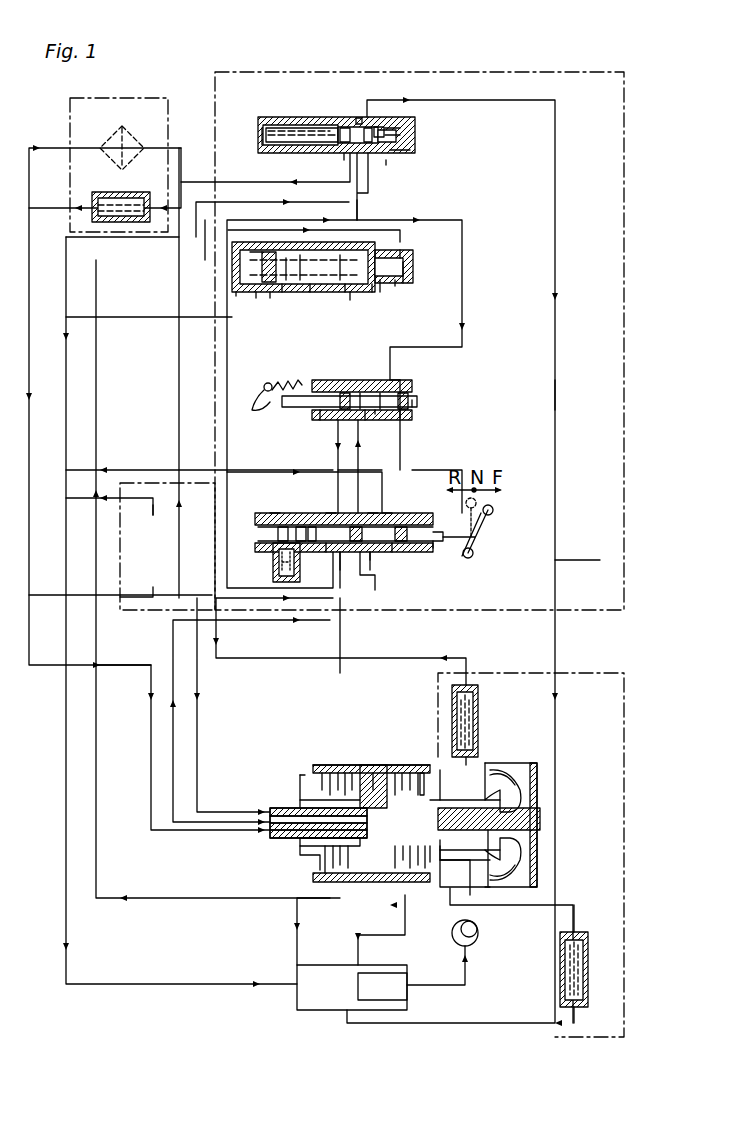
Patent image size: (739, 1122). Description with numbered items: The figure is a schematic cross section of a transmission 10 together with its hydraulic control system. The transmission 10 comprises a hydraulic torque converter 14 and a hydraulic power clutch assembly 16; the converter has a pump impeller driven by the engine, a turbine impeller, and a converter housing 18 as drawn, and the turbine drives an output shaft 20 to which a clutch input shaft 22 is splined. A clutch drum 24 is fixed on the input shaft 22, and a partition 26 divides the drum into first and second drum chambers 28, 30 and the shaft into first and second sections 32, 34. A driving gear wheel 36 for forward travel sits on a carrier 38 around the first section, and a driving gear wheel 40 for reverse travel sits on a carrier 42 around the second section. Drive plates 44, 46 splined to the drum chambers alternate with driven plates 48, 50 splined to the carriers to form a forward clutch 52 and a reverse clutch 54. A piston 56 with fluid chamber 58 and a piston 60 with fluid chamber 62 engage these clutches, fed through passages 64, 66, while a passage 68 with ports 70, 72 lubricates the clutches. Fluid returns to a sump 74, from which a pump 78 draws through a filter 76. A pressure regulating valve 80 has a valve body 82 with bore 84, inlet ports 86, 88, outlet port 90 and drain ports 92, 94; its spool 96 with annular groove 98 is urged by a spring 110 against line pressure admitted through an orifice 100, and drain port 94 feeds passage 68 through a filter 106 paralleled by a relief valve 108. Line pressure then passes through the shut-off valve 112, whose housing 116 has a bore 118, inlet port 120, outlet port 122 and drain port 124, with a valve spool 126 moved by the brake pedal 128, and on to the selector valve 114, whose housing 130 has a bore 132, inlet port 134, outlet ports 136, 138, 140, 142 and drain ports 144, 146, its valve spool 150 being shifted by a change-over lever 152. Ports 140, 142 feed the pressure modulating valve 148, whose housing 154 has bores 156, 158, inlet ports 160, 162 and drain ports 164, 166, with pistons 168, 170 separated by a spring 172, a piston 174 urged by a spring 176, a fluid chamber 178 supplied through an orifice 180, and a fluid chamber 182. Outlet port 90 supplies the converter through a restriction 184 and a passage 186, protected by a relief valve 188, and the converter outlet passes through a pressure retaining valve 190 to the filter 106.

The transmission 10 is at (366, 690).
The hydraulic torque converter 14 is at (530, 752).
The hydraulic power clutch assembly 16 is at (375, 882).
The converter housing 18 is at (538, 780).
The output shaft 20 is at (478, 770).
The clutch input shaft 22 is at (274, 848).
The clutch drum 24 is at (372, 773).
The partition 26 is at (368, 773).
The first drum chamber 28 is at (345, 773).
The second drum chamber 30 is at (418, 773).
The first section 32 is at (295, 810).
The second section 34 is at (500, 765).
The driving gear wheel for forward travel 36 is at (300, 790).
The carrier 38 is at (308, 855).
The driving gear wheel for reverse travel 40 is at (450, 890).
The carrier 42 is at (455, 790).
The drive plates 44 is at (310, 775).
The drive plates 46 is at (450, 790).
The driven plates 48 is at (316, 760).
The driven plates 50 is at (428, 765).
The forward clutch 52 is at (295, 855).
The reverse clutch 54 is at (470, 900).
The piston 56 is at (335, 773).
The fluid chamber 58 is at (355, 880).
The piston 60 is at (402, 773).
The fluid chamber 62 is at (378, 880).
The passage 64 is at (272, 818).
The passage 66 is at (260, 826).
The passage 68 is at (262, 838).
The port 70 is at (340, 873).
The port 72 is at (410, 880).
The sump 74 is at (298, 994).
The filter 76 is at (400, 992).
The hydraulic fluid pump 78 is at (476, 940).
The pressure regulating valve 80 is at (250, 132).
The valve body 82 is at (262, 145).
The bore 84 is at (398, 118).
The inlet port 86 is at (400, 138).
The inlet port 88 is at (400, 153).
The outlet port 90 is at (366, 128).
The drain port 92 is at (346, 156).
The drain port 94 is at (378, 125).
The spool 96 is at (342, 124).
The annular groove 98 is at (358, 208).
The orifice 100 is at (390, 165).
The hydraulic fluid filter 106 is at (128, 140).
The relief valve 108 is at (130, 198).
The spring 110 is at (276, 124).
The shut-off valve 112 is at (485, 400).
The selector valve 114 is at (250, 532).
The housing 116 is at (380, 412).
The bore 118 is at (405, 418).
The inlet port 120 is at (402, 380).
The outlet port 122 is at (368, 420).
The drain port 124 is at (326, 420).
The valve spool 126 is at (420, 406).
The brake pedal 128 is at (265, 391).
The housing 130 is at (275, 513).
The bore 132 is at (270, 550).
The inlet port 134 is at (372, 513).
The outlet port 136 is at (330, 552).
The outlet port 138 is at (395, 556).
The outlet port 140 is at (342, 575).
The outlet port 142 is at (375, 560).
The drain port 144 is at (330, 513).
The drain port 146 is at (385, 513).
The pressure modulating valve 148 is at (440, 285).
The valve spool 150 is at (430, 548).
The change-over lever 152 is at (485, 525).
The housing 154 is at (398, 288).
The bore 156 is at (348, 294).
The bore 158 is at (376, 294).
The inlet port 160 is at (262, 250).
The inlet port 162 is at (400, 252).
The drain port 164 is at (272, 298).
The drain port 166 is at (386, 284).
The piston 168 is at (316, 288).
The piston 170 is at (408, 280).
The spring 172 is at (350, 300).
The piston 174 is at (260, 296).
The spring 176 is at (240, 296).
The fluid chamber 178 is at (288, 292).
The orifice 180 is at (290, 260).
The fluid chamber 182 is at (404, 270).
The restriction 184 is at (358, 115).
The passage 186 is at (553, 395).
The relief valve 188 is at (558, 972).
The pressure retaining valve 190 is at (478, 690).